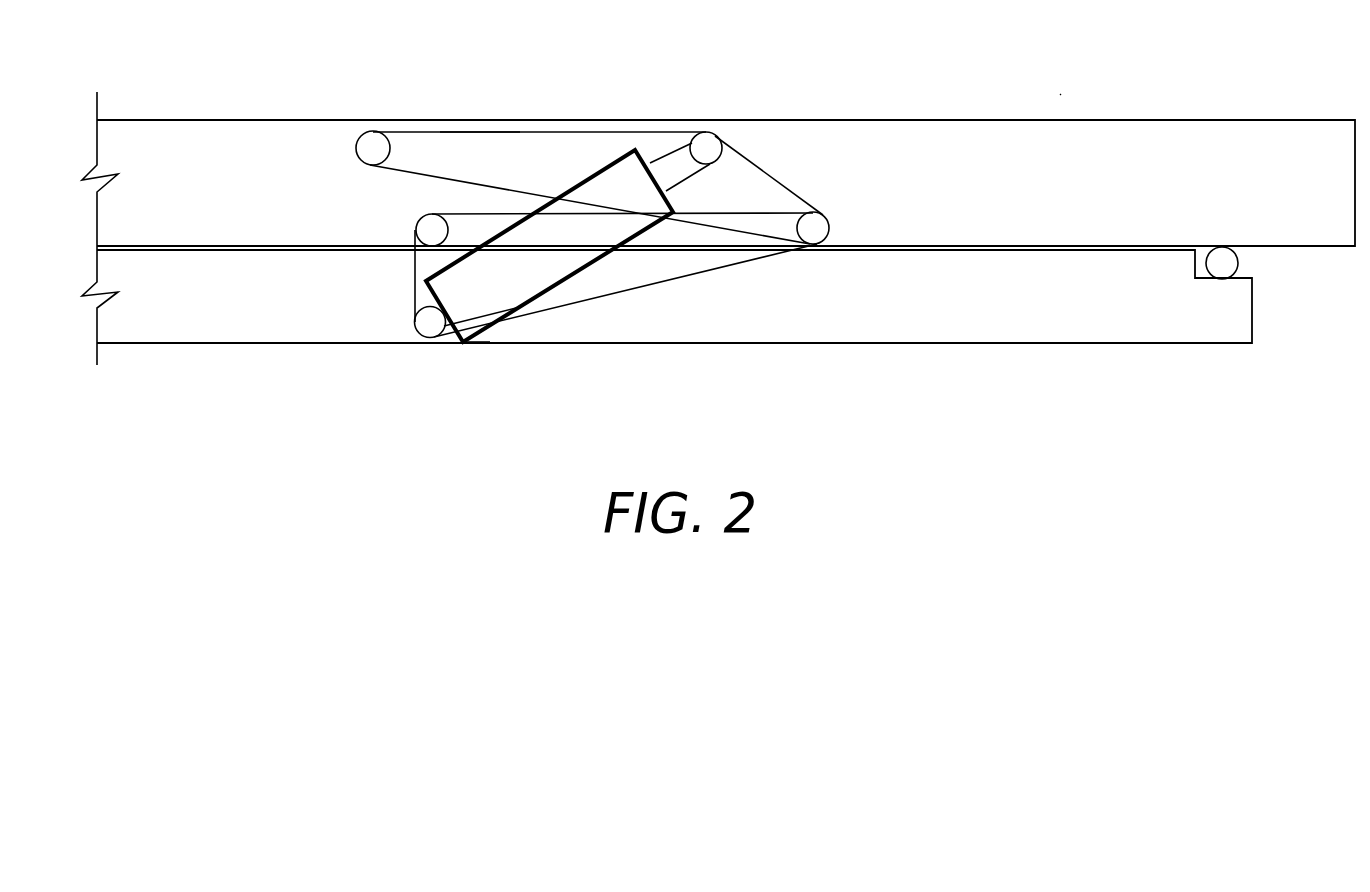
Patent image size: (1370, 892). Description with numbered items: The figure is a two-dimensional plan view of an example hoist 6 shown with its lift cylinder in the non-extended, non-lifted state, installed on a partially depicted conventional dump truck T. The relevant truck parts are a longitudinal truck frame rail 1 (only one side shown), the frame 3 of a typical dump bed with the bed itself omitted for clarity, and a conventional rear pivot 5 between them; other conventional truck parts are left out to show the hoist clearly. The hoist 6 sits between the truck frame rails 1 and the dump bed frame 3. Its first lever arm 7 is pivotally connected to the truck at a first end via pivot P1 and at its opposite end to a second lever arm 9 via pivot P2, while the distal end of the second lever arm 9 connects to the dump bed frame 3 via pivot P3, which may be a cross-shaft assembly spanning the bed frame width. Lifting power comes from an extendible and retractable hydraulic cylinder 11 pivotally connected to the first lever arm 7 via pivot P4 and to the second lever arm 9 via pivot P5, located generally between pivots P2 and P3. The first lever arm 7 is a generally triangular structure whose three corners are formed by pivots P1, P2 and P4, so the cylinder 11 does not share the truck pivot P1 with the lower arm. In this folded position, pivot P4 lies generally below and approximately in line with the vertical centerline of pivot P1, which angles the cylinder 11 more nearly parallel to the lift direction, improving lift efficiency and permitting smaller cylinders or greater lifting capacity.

The truck frame rails 1 is at (886, 312).
The dump bed frame 3 is at (912, 138).
The rear pivot 5 is at (1233, 261).
The hoist 6 is at (356, 226).
The first lever arm 7 is at (627, 273).
The second lever arm 9 is at (478, 146).
The hydraulic cylinder 11 is at (492, 343).
The dump truck T is at (1058, 97).
The pivot P1 is at (432, 230).
The pivot P2 is at (813, 228).
The pivot P3 is at (373, 148).
The pivot P4 is at (424, 322).
The pivot P5 is at (712, 142).